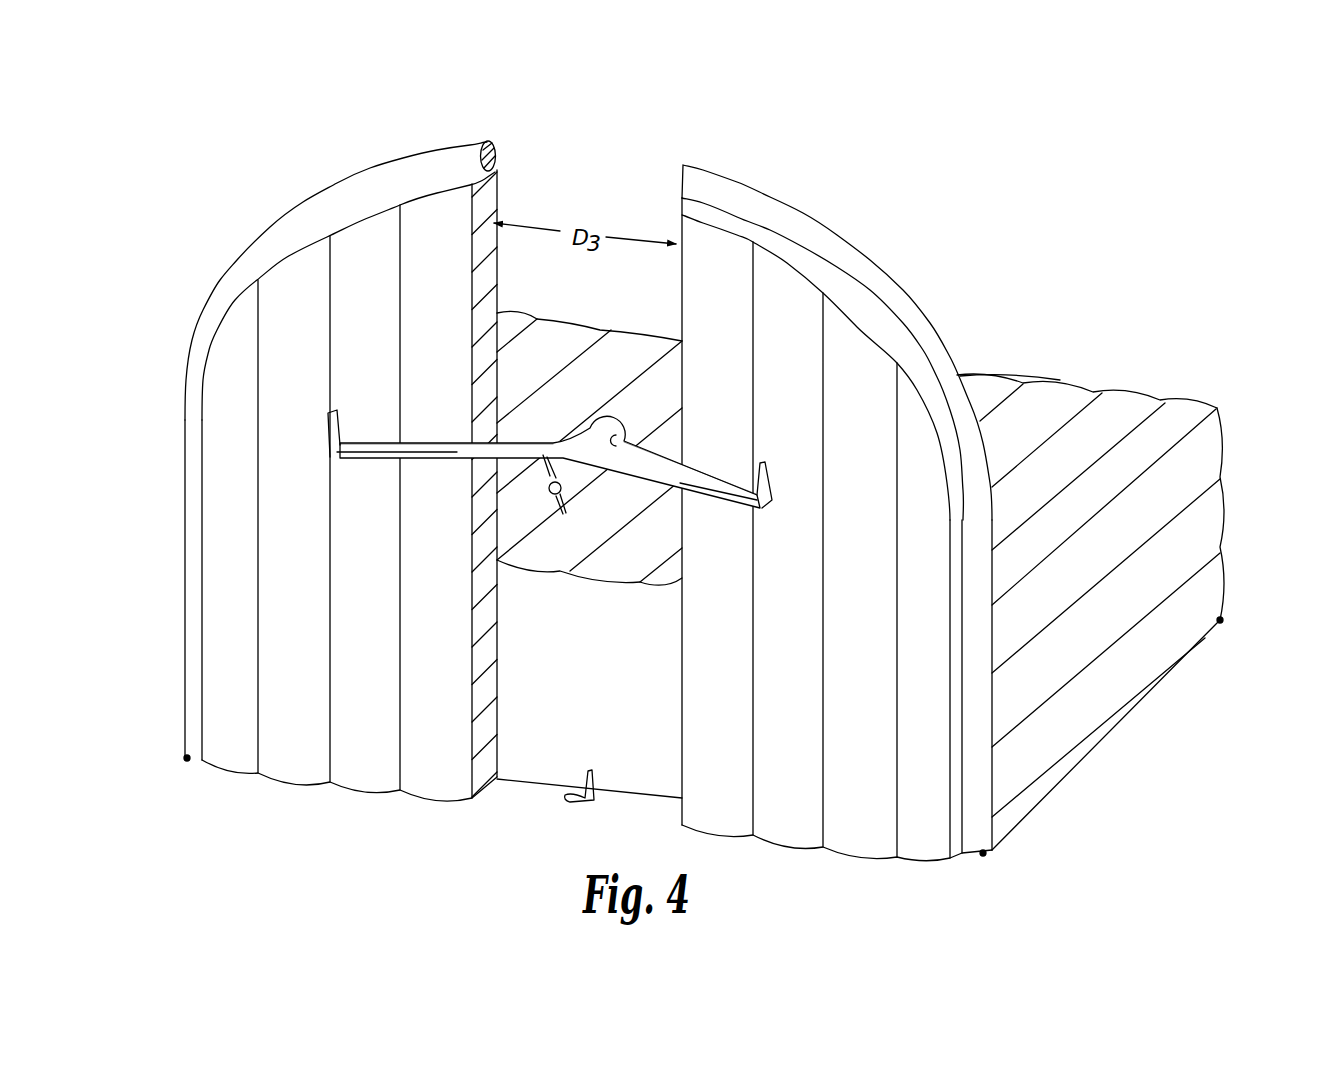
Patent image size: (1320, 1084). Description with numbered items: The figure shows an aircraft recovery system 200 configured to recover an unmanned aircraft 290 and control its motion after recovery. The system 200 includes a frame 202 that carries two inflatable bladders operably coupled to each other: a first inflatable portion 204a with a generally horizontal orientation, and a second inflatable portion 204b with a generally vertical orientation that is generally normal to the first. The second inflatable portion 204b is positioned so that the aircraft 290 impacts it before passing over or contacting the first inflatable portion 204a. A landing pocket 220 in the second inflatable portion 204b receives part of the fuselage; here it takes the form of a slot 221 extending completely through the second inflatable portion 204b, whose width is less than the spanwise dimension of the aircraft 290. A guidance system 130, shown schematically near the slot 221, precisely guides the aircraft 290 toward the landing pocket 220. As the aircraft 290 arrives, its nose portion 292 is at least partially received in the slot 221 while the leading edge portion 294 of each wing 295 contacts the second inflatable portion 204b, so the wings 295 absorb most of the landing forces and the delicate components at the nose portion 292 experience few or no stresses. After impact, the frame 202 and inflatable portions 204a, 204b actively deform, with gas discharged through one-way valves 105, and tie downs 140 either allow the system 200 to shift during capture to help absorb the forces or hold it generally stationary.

The aircraft recovery system 200 is at (1082, 202).
The frame 202 is at (447, 158).
The first inflatable portion 204a is at (1043, 395).
The second inflatable portion 204b is at (350, 783).
The one-way valves 105 is at (1107, 688).
The guidance system 130 is at (577, 797).
The tie downs 140 is at (187, 758).
The landing pocket 220 is at (634, 171).
The slot 221 is at (583, 181).
The unmanned aircraft 290 is at (568, 488).
The nose portion 292 is at (590, 432).
The leading edge portion 294 is at (433, 443).
The wings 295 is at (483, 450).